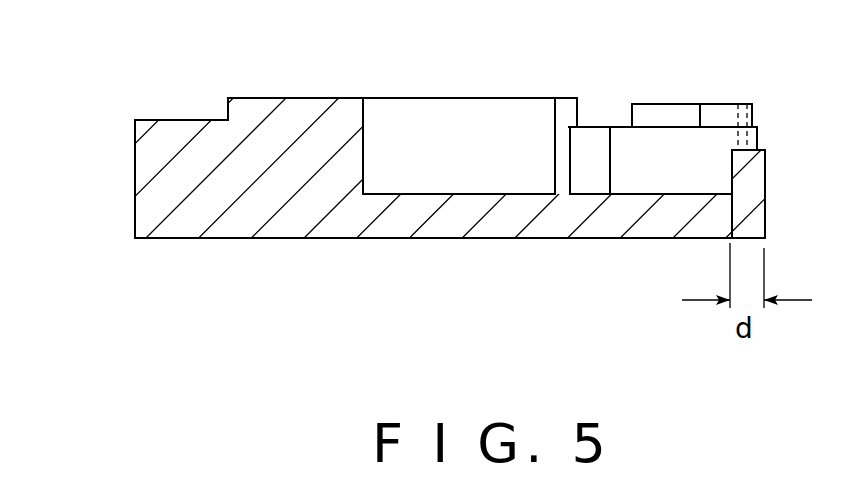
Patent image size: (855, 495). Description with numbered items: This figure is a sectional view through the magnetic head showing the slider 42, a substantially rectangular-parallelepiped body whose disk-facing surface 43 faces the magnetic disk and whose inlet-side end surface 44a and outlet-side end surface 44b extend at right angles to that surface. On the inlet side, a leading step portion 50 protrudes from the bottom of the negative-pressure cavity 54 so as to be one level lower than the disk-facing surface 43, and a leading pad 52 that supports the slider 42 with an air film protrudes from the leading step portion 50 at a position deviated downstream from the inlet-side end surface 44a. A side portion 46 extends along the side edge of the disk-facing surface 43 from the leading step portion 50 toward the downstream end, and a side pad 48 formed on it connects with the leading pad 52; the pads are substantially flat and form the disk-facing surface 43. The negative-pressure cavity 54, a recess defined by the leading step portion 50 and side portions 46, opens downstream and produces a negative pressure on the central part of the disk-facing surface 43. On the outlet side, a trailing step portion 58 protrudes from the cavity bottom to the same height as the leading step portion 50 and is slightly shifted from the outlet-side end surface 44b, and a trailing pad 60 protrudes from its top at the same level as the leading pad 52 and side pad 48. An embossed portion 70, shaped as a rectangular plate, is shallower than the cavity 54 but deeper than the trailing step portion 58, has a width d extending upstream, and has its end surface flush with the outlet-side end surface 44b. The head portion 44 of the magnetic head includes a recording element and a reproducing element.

The slider 42 is at (289, 252).
The disk-facing surface 43 is at (336, 92).
The head portion 44 is at (745, 103).
The inlet-side end surface 44a is at (135, 180).
The outlet-side end surface 44b is at (766, 199).
The side portions 46 is at (450, 122).
The side pad 48 is at (499, 97).
The leading step portion 50 is at (190, 138).
The leading pad 52 is at (278, 97).
The negative-pressure cavity 54 is at (443, 188).
The trailing step portion 58 is at (650, 168).
The trailing pad 60 is at (655, 103).
The embossed portions 70 is at (750, 167).